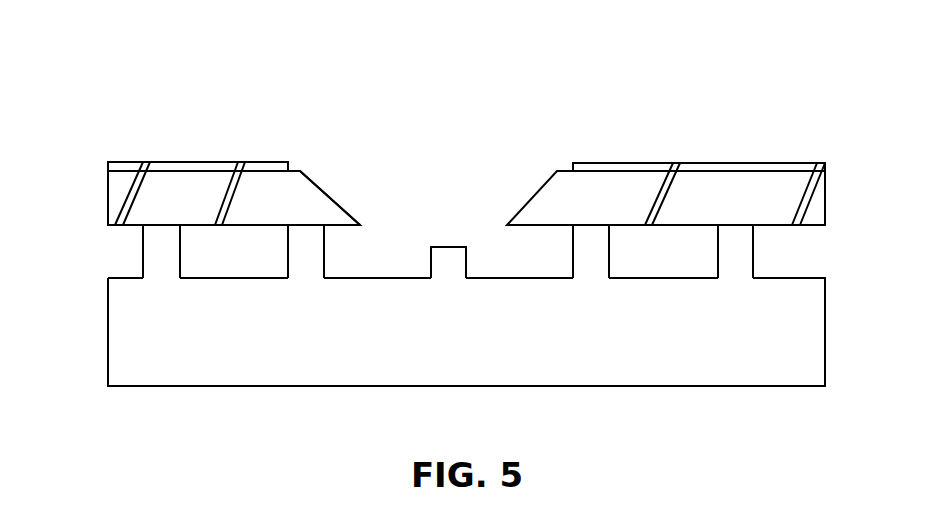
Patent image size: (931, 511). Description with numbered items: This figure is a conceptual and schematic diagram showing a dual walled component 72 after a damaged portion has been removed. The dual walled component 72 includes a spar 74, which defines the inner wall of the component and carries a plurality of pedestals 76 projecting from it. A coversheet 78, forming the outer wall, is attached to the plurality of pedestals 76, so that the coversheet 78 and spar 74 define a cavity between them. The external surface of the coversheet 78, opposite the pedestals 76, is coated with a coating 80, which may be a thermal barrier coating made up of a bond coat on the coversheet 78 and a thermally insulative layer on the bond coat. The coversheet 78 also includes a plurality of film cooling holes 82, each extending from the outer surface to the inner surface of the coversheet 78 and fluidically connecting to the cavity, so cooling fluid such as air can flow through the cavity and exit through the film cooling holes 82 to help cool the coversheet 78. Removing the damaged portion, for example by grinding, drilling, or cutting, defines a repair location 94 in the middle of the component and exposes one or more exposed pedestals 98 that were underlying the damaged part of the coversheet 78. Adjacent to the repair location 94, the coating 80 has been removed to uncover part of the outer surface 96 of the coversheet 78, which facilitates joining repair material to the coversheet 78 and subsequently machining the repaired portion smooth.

The dual walled component 72 is at (103, 100).
The spar 74 is at (115, 333).
The plurality of pedestals 76 is at (297, 251).
The coversheet 78 is at (110, 198).
The coating 80 is at (108, 173).
The plurality of film cooling holes 82 is at (233, 177).
The repair location 94 is at (445, 160).
The outer surface 96 is at (303, 172).
The exposed pedestals 98 is at (448, 262).